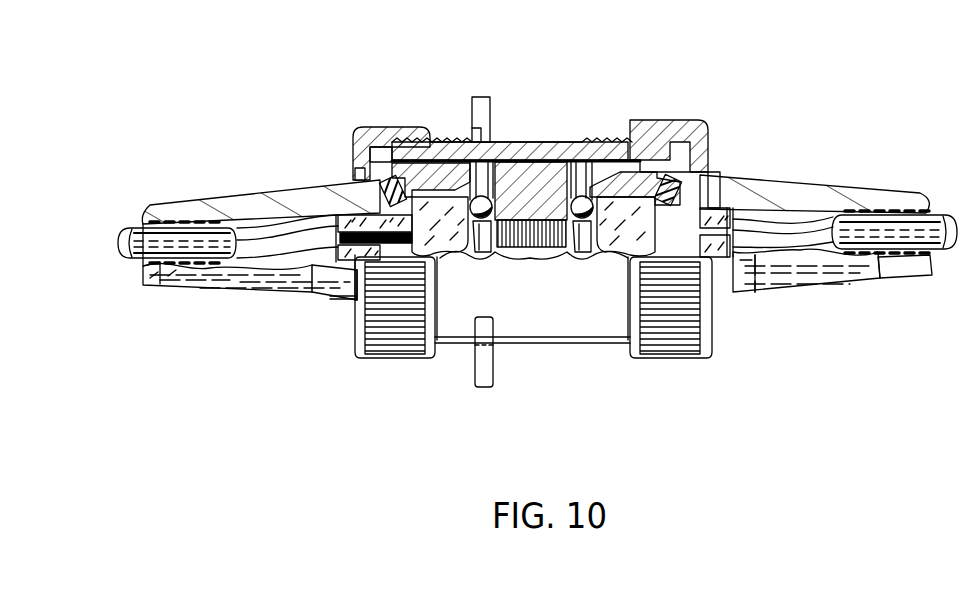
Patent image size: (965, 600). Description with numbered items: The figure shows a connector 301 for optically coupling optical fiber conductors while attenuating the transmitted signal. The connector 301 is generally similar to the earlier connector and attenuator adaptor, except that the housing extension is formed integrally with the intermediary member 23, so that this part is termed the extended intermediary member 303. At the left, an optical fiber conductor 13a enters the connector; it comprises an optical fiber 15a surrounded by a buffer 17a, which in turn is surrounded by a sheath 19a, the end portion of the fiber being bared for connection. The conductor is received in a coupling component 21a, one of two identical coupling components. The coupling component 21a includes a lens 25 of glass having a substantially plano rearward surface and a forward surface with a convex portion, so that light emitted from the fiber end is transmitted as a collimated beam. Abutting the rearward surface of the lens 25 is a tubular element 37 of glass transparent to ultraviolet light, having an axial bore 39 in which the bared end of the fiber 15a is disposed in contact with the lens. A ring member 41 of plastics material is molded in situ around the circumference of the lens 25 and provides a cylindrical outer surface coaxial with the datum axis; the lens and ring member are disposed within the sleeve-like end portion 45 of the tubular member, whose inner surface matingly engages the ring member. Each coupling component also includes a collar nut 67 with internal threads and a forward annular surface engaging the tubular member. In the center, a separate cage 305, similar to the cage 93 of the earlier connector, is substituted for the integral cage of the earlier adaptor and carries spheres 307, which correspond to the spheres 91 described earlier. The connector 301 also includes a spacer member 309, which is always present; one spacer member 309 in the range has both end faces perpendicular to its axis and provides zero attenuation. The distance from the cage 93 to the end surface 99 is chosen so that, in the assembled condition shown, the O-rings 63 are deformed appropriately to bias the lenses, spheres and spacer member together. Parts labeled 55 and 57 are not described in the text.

The optical fiber conductor 13a is at (127, 221).
The optical fiber 15a is at (290, 205).
The buffer 17a is at (275, 280).
The sheath 19a is at (120, 240).
The coupling component 21a is at (336, 141).
The intermediary member 23 is at (469, 87).
The lens 25 is at (458, 208).
The tubular element 37 is at (353, 290).
The axial bore 39 is at (382, 220).
The ring member 41 is at (383, 127).
The sleeve-like end portion 45 is at (656, 150).
The shield braid 55 is at (165, 212).
The clamp 57 is at (142, 265).
The O-ring 63 is at (712, 163).
The collar nut 67 is at (697, 327).
The spheres 91 is at (473, 197).
The cage 93 is at (464, 143).
The end surface 99 is at (665, 121).
The connector 301 is at (534, 90).
The extended intermediary member 303 is at (599, 142).
The cage 305 is at (633, 122).
The spheres 307 is at (548, 145).
The spacer member 309 is at (512, 172).